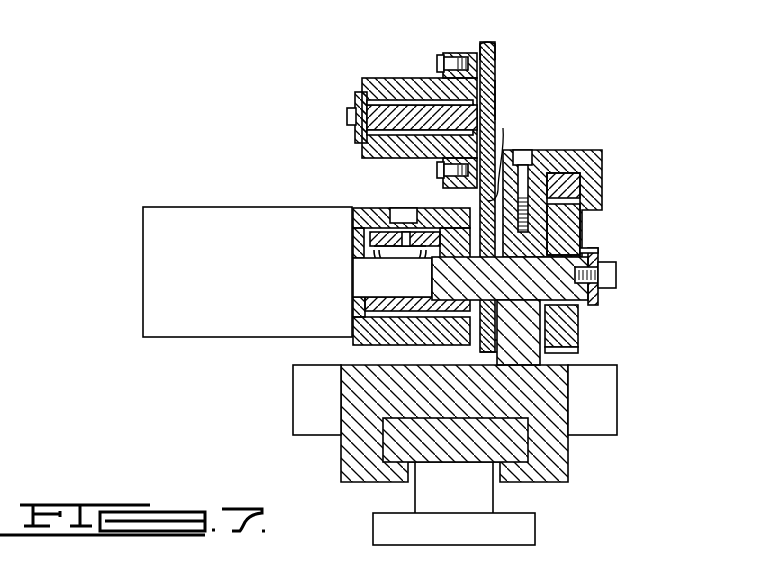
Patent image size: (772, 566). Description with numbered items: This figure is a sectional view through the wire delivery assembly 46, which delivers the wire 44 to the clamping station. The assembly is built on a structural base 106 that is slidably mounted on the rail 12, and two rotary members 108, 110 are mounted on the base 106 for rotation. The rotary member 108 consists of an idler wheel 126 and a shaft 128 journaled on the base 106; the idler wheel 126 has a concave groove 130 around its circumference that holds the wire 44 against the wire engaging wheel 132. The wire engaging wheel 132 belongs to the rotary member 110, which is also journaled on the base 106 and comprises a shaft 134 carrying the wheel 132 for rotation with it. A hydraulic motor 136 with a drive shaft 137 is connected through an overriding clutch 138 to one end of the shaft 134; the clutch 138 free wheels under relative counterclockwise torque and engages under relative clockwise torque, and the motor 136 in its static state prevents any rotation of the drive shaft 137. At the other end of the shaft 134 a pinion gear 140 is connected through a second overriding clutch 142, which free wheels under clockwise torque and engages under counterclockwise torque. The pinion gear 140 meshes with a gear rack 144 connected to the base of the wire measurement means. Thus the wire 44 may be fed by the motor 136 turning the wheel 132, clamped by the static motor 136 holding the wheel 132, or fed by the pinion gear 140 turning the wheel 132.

The rail 12 is at (540, 537).
The wire 44 is at (515, 153).
The wire delivery assembly 46 is at (662, 336).
The structural base 106 is at (557, 457).
The rotary member 108 is at (590, 74).
The rotary member 110 is at (616, 285).
The idler wheel 126 is at (494, 62).
The shaft 128 is at (412, 112).
The concave groove 130 is at (486, 45).
The wire engaging wheel 132 is at (522, 360).
The shaft 134 is at (597, 256).
The hydraulic motor 136 is at (207, 220).
The drive shaft 137 is at (357, 275).
The overriding clutch 138 is at (441, 232).
The pinion gear 140 is at (576, 228).
The overriding clutch 142 is at (583, 322).
The gear rack 144 is at (568, 180).